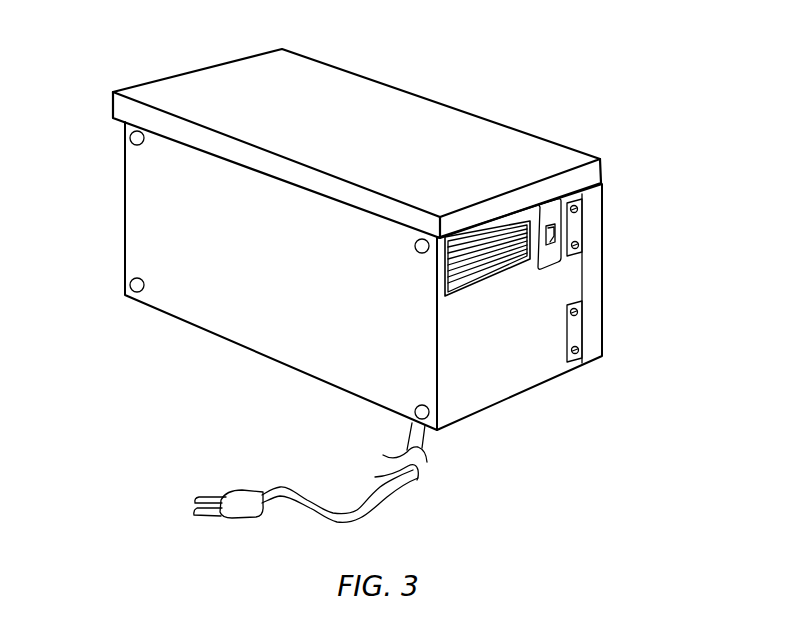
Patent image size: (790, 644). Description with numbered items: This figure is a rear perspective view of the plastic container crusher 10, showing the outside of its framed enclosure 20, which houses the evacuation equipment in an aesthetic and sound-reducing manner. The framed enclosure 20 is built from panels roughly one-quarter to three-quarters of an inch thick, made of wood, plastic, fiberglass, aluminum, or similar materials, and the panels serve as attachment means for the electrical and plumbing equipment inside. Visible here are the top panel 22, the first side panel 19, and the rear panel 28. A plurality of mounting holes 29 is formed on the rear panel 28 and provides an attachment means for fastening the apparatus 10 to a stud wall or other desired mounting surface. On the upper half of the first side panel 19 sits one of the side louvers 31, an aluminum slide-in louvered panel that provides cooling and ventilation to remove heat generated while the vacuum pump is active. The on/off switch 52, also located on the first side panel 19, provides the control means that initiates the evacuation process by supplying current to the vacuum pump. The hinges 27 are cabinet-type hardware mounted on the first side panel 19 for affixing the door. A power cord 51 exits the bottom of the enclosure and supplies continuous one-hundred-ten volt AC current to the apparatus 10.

The plastic container crusher 10 is at (118, 388).
The first side panel 19 is at (470, 367).
The framed enclosure 20 is at (423, 143).
The top panel 22 is at (227, 88).
The hinges 27 is at (577, 220).
The rear panel 28 is at (252, 312).
The mounting holes 29 is at (130, 279).
The side louvers 31 is at (527, 217).
The power cord 51 is at (390, 498).
The on/off switch 52 is at (540, 272).